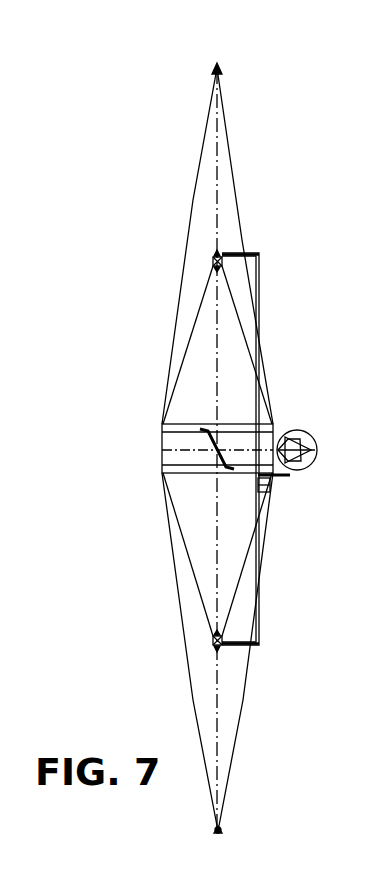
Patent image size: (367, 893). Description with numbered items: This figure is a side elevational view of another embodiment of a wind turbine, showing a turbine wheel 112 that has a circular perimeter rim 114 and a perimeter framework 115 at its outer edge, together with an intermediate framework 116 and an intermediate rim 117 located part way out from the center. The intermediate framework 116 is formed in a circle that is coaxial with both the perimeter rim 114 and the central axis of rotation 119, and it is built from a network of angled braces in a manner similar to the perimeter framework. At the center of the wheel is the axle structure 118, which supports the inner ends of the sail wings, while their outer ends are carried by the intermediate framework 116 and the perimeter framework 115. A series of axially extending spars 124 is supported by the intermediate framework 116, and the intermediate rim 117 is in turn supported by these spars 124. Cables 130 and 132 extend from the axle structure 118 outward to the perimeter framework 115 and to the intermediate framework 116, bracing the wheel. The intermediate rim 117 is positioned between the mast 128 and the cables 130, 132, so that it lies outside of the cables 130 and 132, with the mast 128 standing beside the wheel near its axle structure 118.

The turbine wheel 112 is at (244, 160).
The perimeter rim 114 is at (220, 68).
The perimeter framework 115 is at (221, 74).
The intermediate framework 116 is at (213, 262).
The intermediate rim 117 is at (259, 272).
The axle structure 118 is at (160, 443).
The central axis of rotation 119 is at (170, 452).
The spars 124 is at (240, 254).
The mast 128 is at (306, 436).
The cables 130 is at (195, 190).
The cables 132 is at (191, 326).